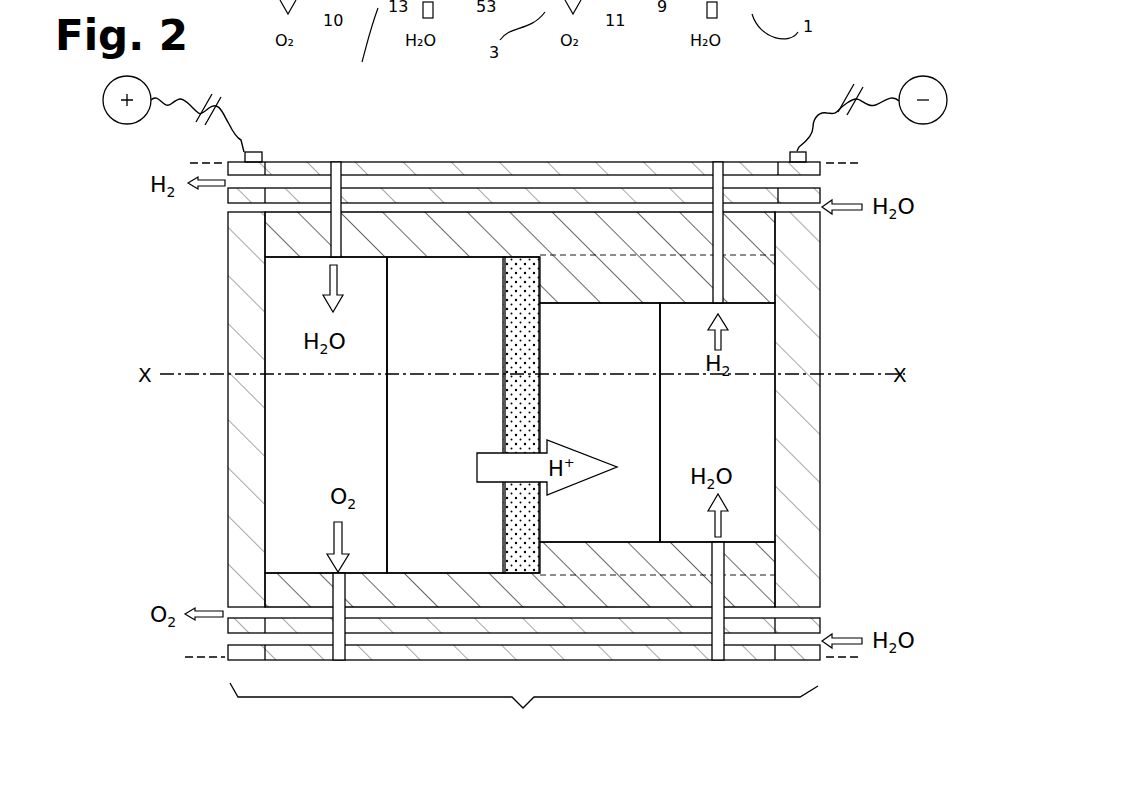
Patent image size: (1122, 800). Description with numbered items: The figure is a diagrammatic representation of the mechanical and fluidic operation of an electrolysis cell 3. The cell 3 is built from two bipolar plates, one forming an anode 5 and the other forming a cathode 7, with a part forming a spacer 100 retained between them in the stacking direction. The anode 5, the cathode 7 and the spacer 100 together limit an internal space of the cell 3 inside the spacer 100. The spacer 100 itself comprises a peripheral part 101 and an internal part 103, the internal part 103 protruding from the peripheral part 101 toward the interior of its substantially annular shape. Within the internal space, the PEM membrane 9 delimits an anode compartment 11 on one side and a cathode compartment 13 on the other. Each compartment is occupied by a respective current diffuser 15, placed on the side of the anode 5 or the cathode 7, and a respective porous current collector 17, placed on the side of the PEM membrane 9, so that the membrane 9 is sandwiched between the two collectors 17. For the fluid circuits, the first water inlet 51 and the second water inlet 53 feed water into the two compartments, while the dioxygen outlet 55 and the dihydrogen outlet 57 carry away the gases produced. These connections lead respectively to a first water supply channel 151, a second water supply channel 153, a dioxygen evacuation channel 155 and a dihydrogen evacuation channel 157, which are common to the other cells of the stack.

The electrolysis cell 3 is at (524, 711).
The anode 5 is at (237, 325).
The cathode 7 is at (806, 460).
The PEM membrane 9 is at (530, 426).
The anode compartment 11 is at (300, 468).
The cathode compartment 13 is at (750, 515).
The current diffuser 15 is at (333, 426).
The porous current collector 17 is at (448, 426).
The first water inlet 51 is at (333, 238).
The second water inlet 53 is at (712, 565).
The dioxygen outlet 55 is at (338, 588).
The dihydrogen outlet 57 is at (724, 216).
The spacer 100 is at (646, 250).
The peripheral part 101 is at (750, 232).
The internal part 103 is at (752, 280).
The first water supply channel 151 is at (418, 225).
The second water supply channel 153 is at (328, 640).
The dioxygen evacuation channel 155 is at (424, 608).
The dihydrogen evacuation channel 157 is at (470, 194).